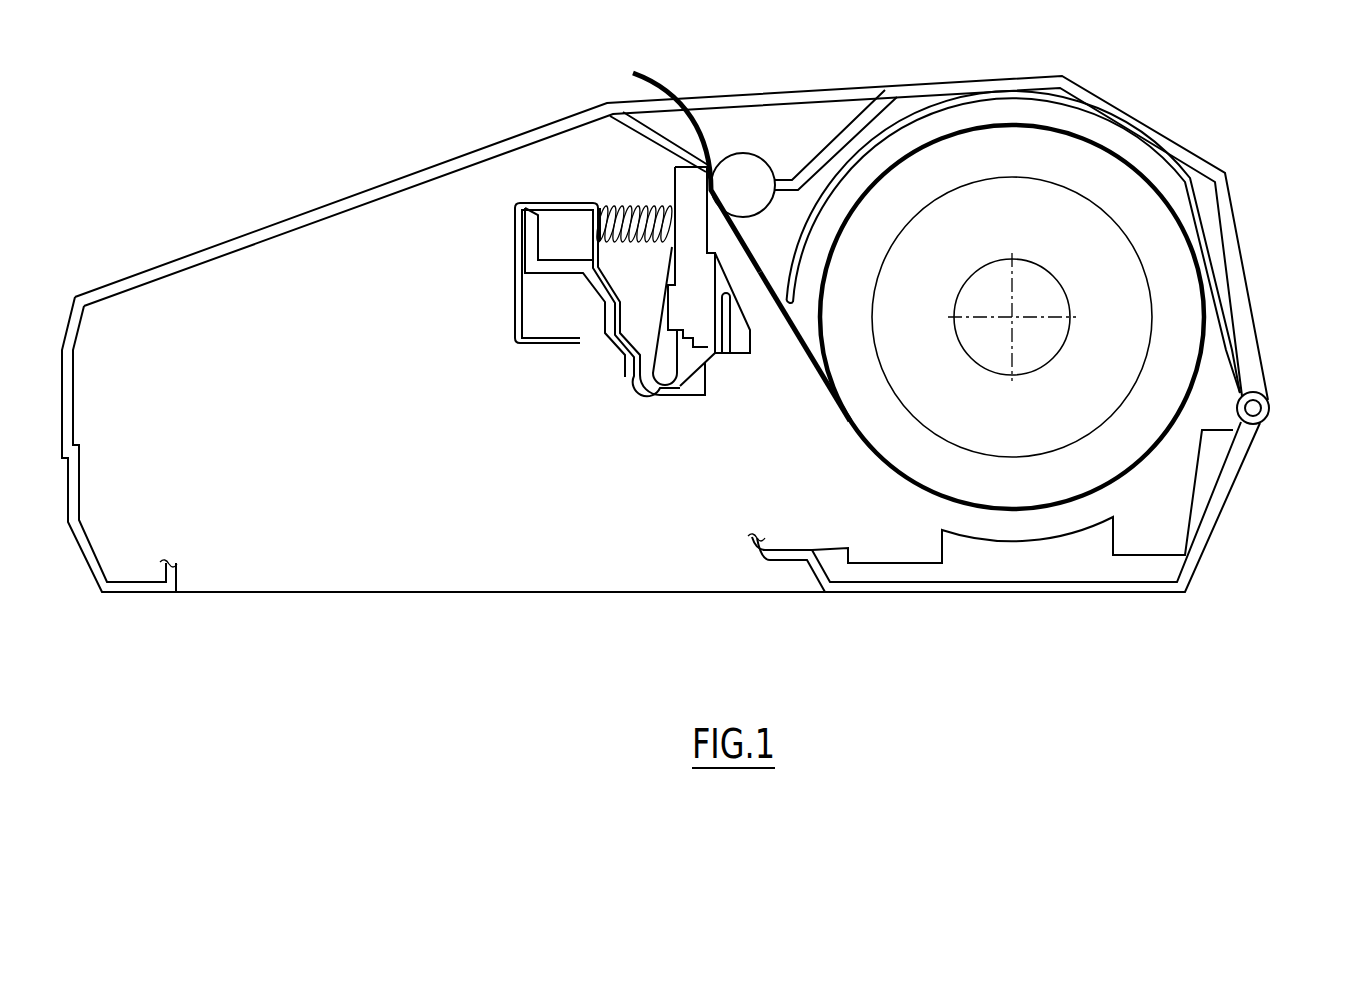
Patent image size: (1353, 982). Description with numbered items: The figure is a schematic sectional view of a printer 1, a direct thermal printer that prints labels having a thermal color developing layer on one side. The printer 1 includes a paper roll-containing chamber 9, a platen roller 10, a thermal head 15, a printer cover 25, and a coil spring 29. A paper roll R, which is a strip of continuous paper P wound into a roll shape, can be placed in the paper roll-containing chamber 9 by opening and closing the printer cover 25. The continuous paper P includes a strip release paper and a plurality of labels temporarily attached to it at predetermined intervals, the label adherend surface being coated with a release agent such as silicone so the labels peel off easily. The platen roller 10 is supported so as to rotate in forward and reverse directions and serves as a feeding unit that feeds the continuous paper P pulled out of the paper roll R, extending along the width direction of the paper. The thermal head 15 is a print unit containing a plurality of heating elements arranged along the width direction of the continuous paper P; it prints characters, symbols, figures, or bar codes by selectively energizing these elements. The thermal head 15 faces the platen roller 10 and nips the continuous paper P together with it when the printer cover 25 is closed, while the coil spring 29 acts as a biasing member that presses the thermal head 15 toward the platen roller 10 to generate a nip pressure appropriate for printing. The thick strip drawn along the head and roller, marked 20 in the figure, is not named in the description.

The printer 1 is at (119, 168).
The coil spring 29 is at (618, 212).
The thermal head 15 is at (680, 183).
The tape 20 is at (715, 125).
The platen roller 10 is at (755, 167).
The paper roll R is at (1025, 123).
The paper roll-containing chamber 9 is at (943, 383).
The printer cover 25 is at (1250, 287).
The continuous paper P is at (805, 362).